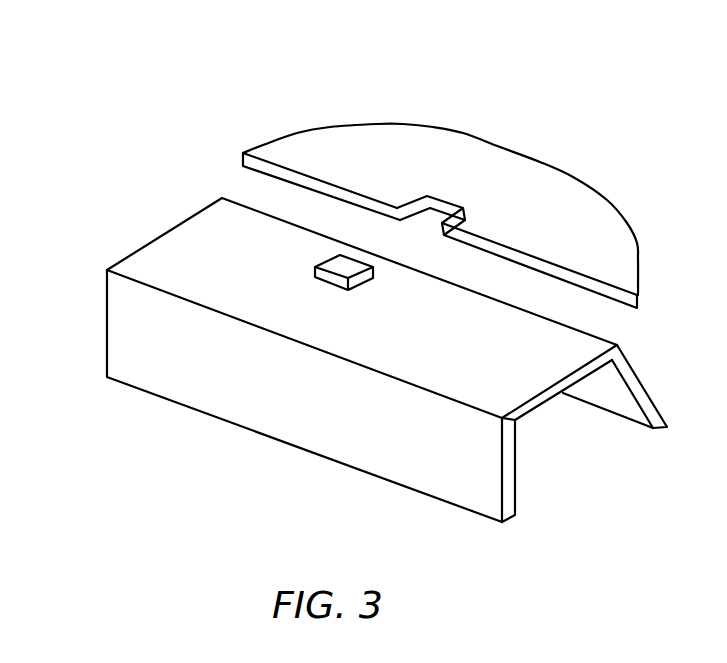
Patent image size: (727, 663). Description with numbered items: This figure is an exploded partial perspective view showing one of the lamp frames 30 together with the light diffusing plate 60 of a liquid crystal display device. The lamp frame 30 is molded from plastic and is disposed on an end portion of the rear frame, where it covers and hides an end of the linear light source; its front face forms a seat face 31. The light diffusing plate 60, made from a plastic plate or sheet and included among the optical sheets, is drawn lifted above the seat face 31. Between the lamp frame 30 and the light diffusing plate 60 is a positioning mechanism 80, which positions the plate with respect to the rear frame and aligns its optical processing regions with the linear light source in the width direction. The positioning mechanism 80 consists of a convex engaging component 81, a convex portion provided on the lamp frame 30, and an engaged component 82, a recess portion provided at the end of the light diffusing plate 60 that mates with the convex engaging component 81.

The lamp frame 30 is at (107, 334).
The seat face 31 is at (165, 258).
The light diffusing plate 60 is at (307, 135).
The positioning mechanism 80 is at (473, 63).
The convex engaging component 81 is at (343, 265).
The engaged component 82 is at (442, 200).